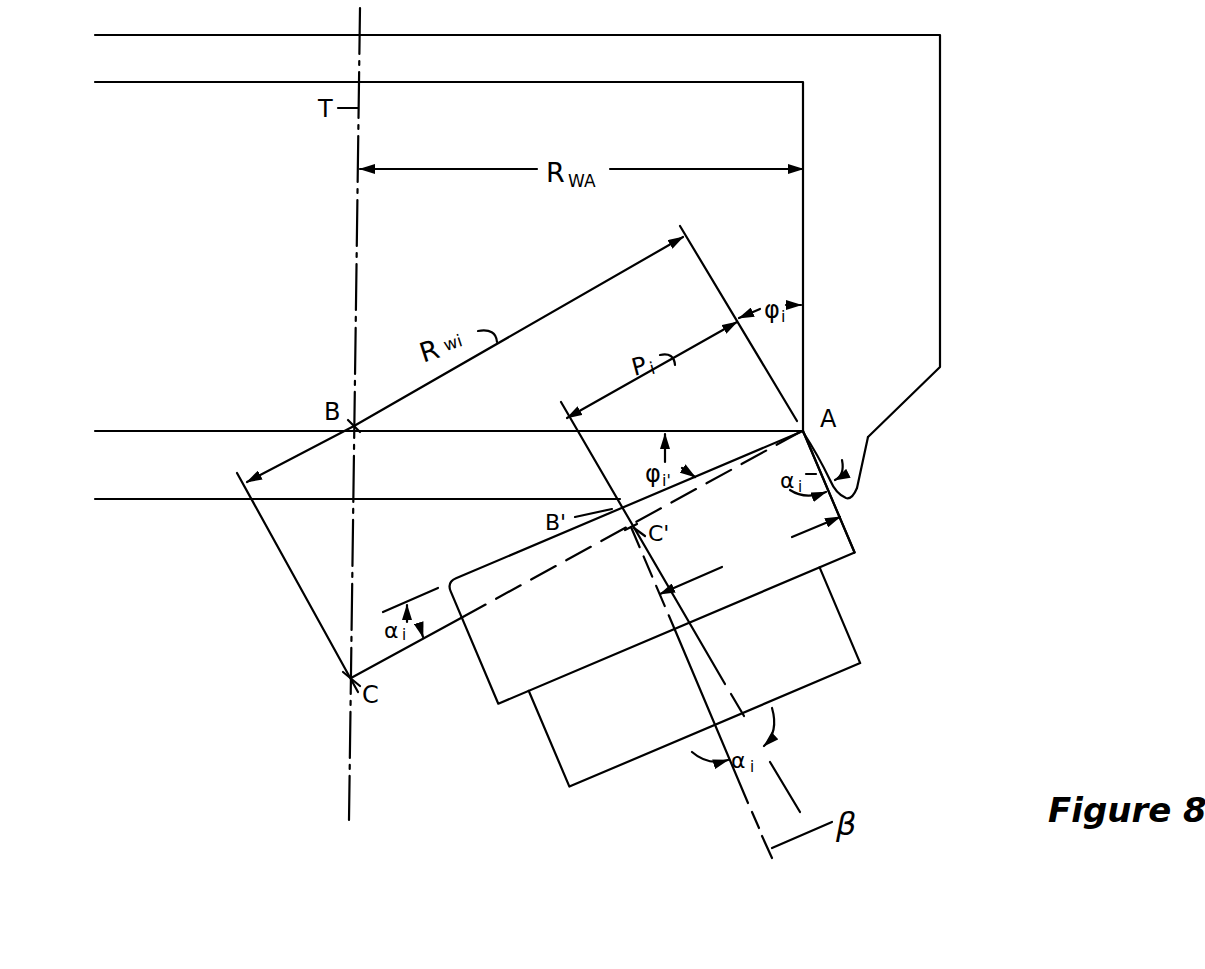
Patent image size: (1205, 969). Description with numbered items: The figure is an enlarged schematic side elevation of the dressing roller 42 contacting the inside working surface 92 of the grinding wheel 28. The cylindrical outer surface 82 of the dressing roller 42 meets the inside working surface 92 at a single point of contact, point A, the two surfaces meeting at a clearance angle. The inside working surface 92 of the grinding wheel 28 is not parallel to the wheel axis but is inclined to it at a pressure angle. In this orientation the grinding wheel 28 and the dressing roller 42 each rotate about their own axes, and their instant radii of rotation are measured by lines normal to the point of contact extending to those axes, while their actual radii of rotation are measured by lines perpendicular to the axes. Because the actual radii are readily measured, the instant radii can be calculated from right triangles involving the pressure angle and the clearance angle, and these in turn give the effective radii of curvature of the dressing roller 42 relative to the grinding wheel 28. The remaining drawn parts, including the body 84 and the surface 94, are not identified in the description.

The grinding wheel 28 is at (912, 200).
The dressing roller 42 is at (715, 609).
The cylindrical outer surface 82 is at (847, 533).
The tool holder body 84 is at (502, 558).
The inside working surface 92 is at (838, 503).
The insert rake surface 94 is at (862, 468).